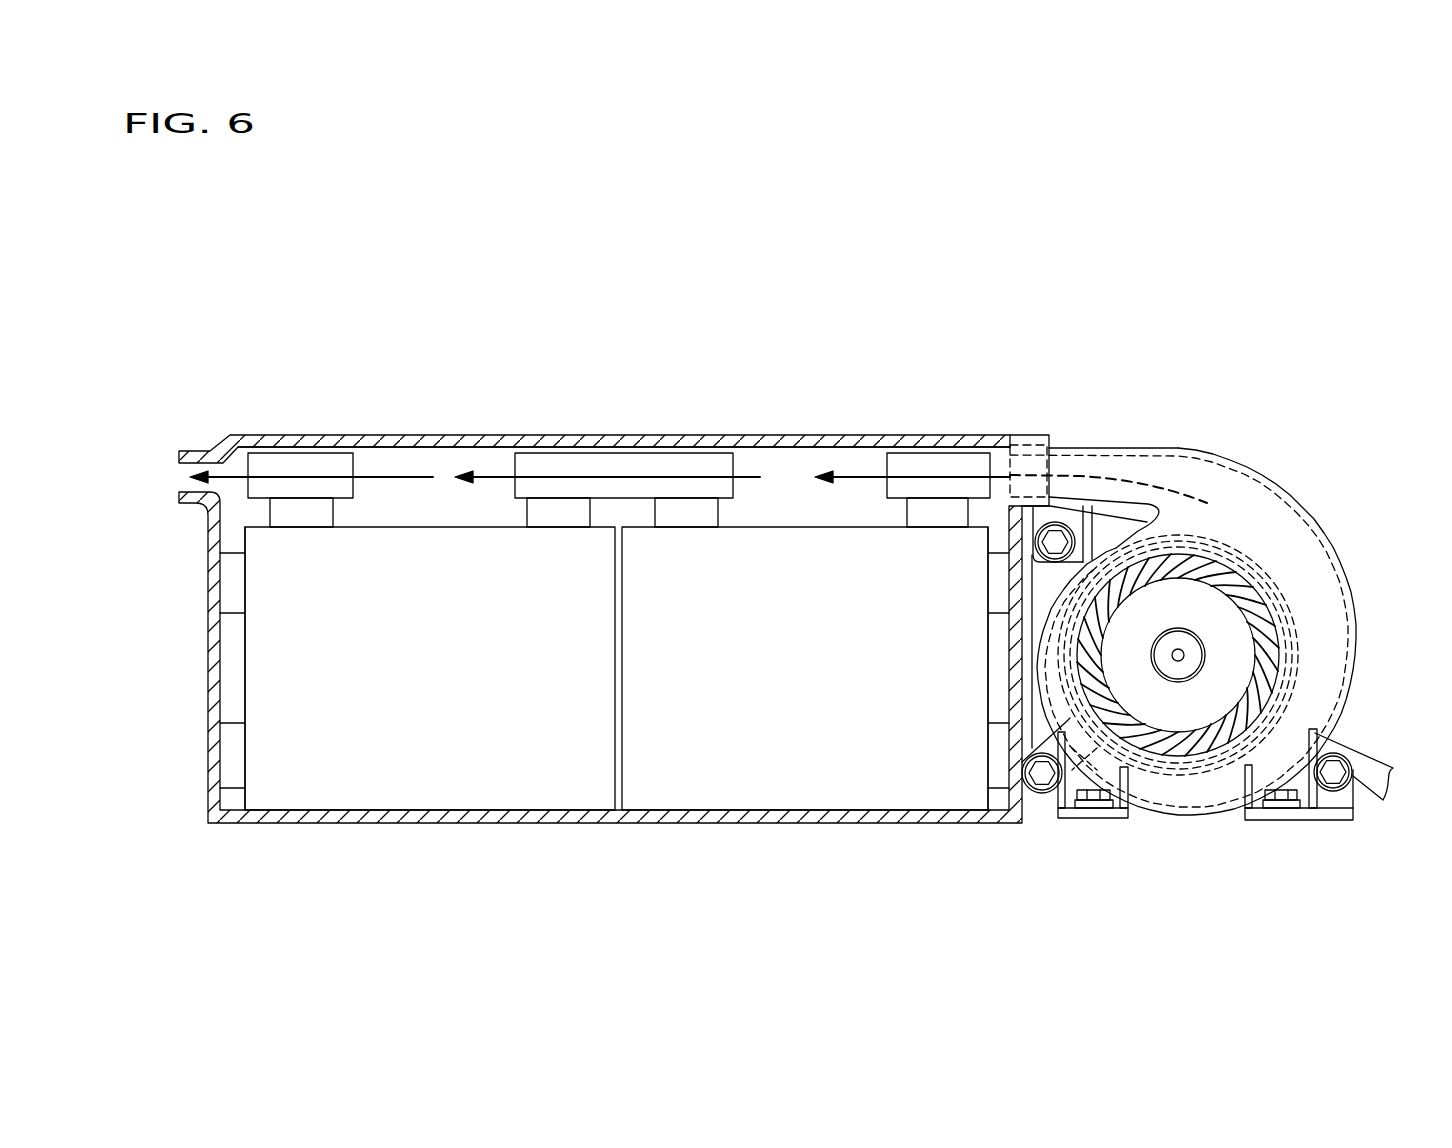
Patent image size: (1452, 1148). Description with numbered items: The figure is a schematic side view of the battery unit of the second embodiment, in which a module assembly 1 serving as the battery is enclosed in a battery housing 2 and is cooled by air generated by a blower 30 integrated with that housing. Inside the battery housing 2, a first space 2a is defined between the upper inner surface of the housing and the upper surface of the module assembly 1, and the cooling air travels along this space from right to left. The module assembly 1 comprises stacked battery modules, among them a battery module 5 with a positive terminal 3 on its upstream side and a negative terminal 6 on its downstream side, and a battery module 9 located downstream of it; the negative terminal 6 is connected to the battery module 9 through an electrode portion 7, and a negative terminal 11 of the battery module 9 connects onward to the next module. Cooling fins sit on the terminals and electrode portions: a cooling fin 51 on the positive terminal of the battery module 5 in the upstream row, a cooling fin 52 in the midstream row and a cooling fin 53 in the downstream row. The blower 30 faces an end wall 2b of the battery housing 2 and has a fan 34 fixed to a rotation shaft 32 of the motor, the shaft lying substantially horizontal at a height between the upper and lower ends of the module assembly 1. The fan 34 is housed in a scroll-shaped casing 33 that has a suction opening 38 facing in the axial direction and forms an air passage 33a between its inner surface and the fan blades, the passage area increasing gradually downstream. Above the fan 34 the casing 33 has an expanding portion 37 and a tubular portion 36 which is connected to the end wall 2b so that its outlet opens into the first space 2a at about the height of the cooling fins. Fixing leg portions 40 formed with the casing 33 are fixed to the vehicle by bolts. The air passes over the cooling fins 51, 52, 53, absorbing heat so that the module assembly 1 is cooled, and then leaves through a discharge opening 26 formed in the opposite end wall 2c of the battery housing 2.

The module assembly 1 is at (546, 428).
The battery housing 2 is at (208, 646).
The first space 2a is at (428, 463).
The end wall 2b is at (1022, 800).
The end wall 2c is at (208, 540).
The positive terminal 3 is at (910, 515).
The battery module 5 is at (670, 772).
The negative terminal 6 is at (712, 516).
The electrode portion 7 is at (535, 517).
The battery module 9 is at (443, 782).
The negative terminal 11 is at (333, 516).
The discharge opening 26 is at (178, 479).
The blower 30 is at (1316, 504).
The rotation shaft 32 is at (1183, 650).
The casing 33 is at (1352, 578).
The air passage 33a is at (1338, 636).
The fan 34 is at (1165, 755).
The tubular portion 36 is at (1097, 447).
The expanding portion 37 is at (1026, 518).
The suction opening 38 is at (1192, 718).
The fixing leg portion 40 is at (1093, 818).
The cooling fin 51 is at (925, 463).
The cooling fin 52 is at (742, 462).
The cooling fin 53 is at (360, 455).